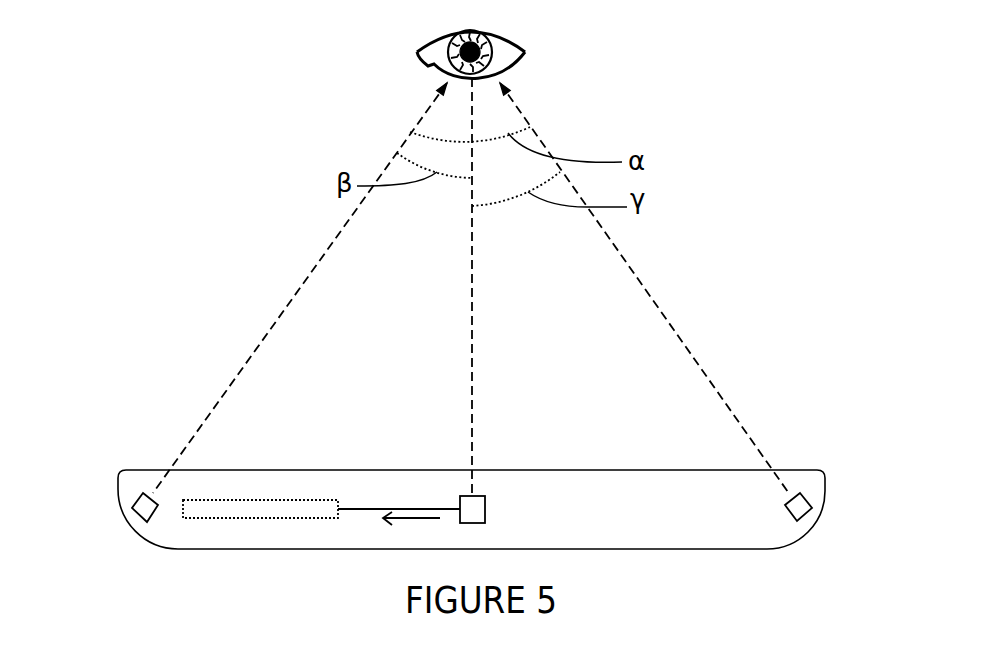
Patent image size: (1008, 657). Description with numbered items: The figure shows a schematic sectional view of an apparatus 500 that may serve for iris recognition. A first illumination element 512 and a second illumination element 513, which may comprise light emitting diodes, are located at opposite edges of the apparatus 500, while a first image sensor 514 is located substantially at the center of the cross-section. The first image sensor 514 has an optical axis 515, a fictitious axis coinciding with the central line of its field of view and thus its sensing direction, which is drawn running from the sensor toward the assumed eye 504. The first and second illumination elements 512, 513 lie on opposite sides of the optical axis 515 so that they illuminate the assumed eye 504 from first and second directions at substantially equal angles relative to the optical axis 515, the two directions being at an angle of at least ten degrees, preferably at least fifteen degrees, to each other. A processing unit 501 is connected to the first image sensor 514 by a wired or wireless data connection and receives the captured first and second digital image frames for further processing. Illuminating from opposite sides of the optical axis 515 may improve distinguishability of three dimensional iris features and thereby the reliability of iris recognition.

The apparatus 500 is at (150, 540).
The processing unit 501 is at (260, 500).
The assumed eye 504 is at (495, 32).
The first illumination element 512 is at (140, 507).
The second illumination element 513 is at (800, 507).
The first image sensor 514 is at (485, 509).
The optical axis 515 is at (473, 323).